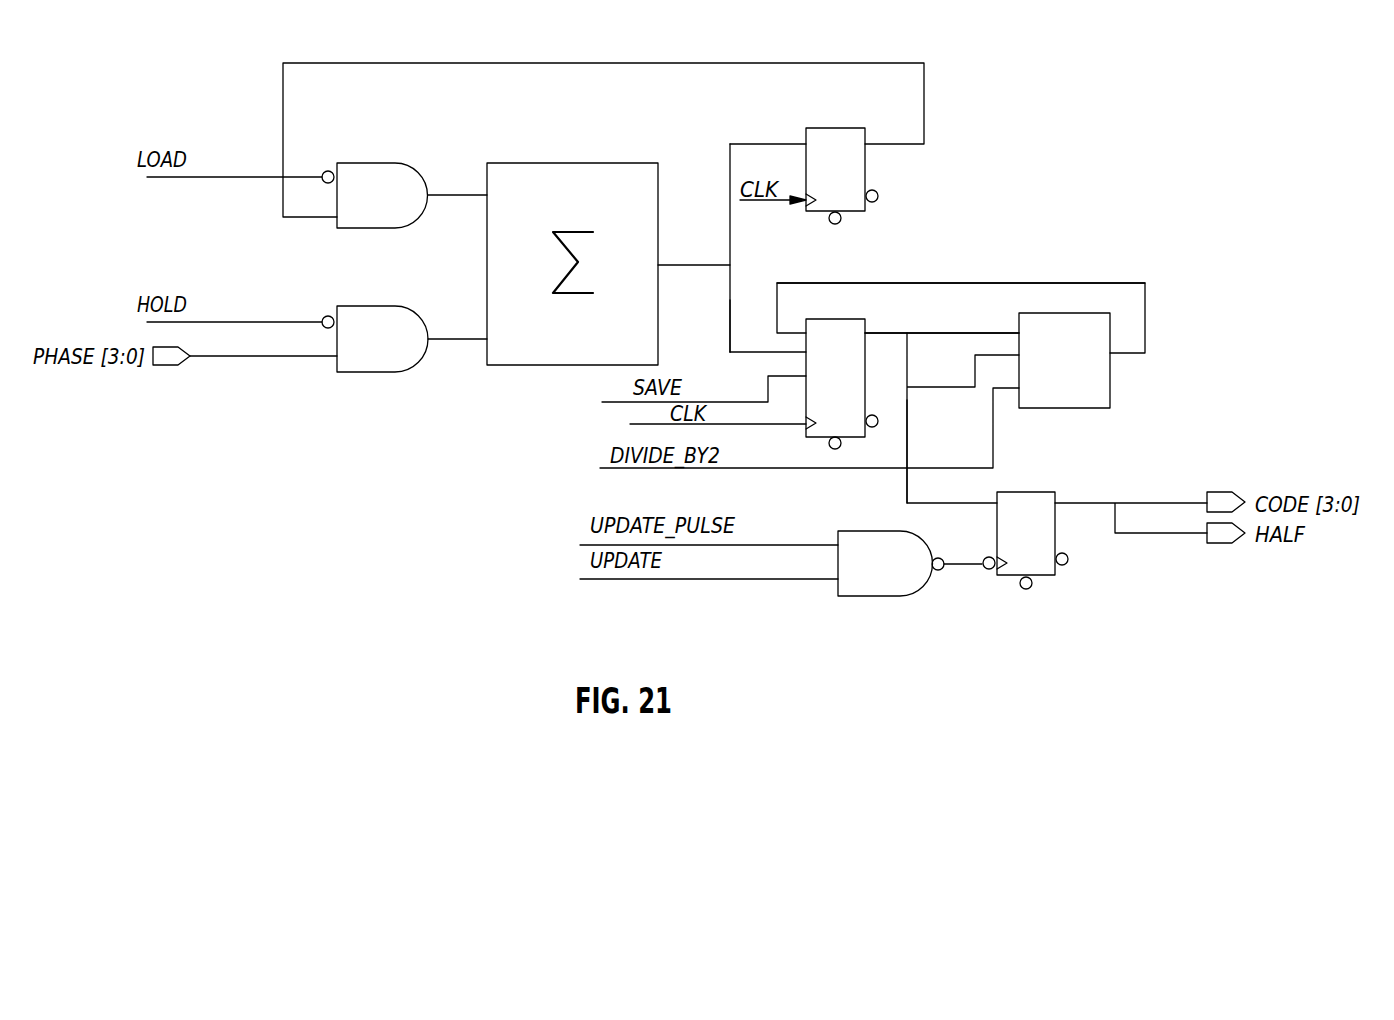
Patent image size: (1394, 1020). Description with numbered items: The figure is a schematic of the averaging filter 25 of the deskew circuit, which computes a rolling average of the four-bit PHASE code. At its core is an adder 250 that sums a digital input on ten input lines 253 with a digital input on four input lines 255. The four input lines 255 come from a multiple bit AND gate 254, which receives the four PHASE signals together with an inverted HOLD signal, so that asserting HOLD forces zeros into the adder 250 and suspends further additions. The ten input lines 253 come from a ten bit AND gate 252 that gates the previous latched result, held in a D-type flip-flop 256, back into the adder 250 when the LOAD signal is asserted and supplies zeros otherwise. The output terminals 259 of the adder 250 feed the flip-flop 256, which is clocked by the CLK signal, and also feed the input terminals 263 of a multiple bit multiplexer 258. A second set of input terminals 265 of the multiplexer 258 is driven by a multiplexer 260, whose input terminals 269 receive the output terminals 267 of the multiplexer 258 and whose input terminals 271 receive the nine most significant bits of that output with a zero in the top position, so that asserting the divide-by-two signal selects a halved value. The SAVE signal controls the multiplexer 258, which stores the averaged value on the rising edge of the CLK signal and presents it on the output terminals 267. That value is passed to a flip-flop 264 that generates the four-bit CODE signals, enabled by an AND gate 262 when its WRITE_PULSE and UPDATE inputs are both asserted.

The averaging filter 25 is at (1268, 210).
The adder 250 is at (553, 365).
The ten bit AND gate 252 is at (370, 163).
The ten input lines 253 is at (447, 195).
The multiple bit AND gate 254 is at (368, 372).
The four input lines 255 is at (455, 340).
The D-type flip-flop 256 is at (860, 126).
The multiple bit multiplexer 258 is at (832, 319).
The output terminals of the adder 259 is at (682, 265).
The multiplexer 260 is at (1110, 377).
The AND gate 262 is at (875, 596).
The input terminals of the multiplexer 263 is at (730, 338).
The flip-flop 264 is at (1013, 575).
The input terminals of the multiplexer 265 is at (838, 283).
The output terminals of the multiplexer 267 is at (888, 330).
The input terminals of the multiplexer 269 is at (980, 330).
The input terminals of the multiplexer 271 is at (907, 440).